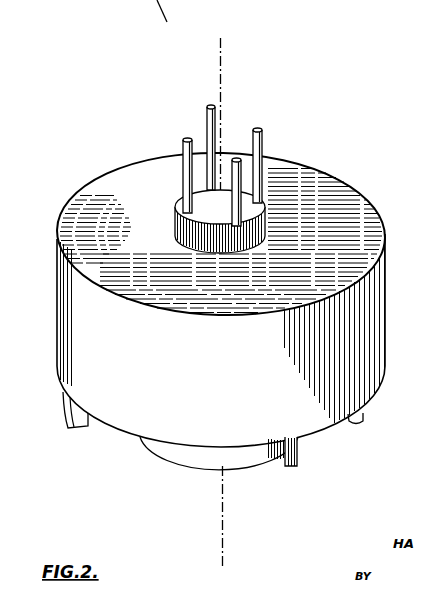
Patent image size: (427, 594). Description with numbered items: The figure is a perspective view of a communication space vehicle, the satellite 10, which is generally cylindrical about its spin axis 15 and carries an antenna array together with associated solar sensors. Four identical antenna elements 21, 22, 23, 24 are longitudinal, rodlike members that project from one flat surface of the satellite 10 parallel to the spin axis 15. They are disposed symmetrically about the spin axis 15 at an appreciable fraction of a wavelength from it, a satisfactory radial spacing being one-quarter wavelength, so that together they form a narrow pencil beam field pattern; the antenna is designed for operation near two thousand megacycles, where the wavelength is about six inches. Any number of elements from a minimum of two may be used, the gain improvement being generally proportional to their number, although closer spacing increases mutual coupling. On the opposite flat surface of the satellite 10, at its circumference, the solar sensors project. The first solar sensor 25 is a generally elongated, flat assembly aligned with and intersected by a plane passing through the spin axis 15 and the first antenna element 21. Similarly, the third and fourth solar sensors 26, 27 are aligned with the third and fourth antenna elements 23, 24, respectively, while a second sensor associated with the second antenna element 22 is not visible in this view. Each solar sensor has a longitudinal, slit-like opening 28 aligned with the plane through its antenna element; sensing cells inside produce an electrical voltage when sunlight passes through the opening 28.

The satellite 10 is at (360, 216).
The spin axis 15 is at (221, 81).
The first antenna element 21 is at (262, 141).
The second antenna element 22 is at (215, 116).
The third antenna element 23 is at (182, 141).
The fourth antenna element 24 is at (241, 180).
The first solar sensor 25 is at (357, 420).
The third solar sensor 26 is at (86, 427).
The fourth solar sensor 27 is at (281, 452).
The slit-like opening 28 is at (292, 468).